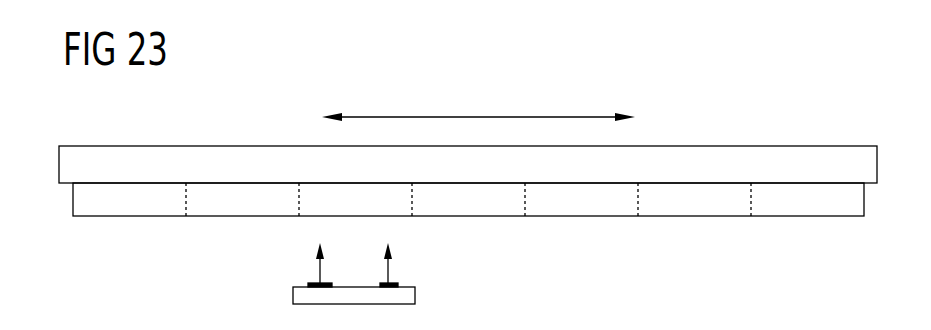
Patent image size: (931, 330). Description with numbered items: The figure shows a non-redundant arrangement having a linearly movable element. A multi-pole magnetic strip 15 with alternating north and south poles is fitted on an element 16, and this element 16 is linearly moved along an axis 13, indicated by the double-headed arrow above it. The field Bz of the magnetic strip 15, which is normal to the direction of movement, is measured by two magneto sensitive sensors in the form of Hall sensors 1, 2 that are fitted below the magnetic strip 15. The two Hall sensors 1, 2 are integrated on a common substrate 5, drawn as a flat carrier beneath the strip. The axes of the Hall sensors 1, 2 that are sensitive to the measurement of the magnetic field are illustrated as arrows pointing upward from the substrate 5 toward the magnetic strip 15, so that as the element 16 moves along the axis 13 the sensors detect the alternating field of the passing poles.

The Hall sensor 1 is at (309, 281).
The Hall sensor 2 is at (392, 281).
The common substrate 5 is at (412, 296).
The axis 13 is at (478, 116).
The multi-pole magnetic strip 15 is at (102, 208).
The element 16 is at (199, 156).